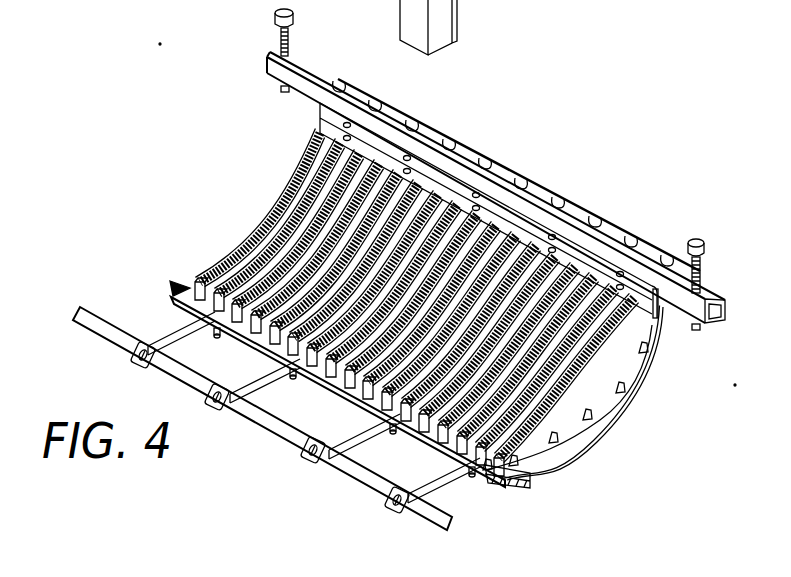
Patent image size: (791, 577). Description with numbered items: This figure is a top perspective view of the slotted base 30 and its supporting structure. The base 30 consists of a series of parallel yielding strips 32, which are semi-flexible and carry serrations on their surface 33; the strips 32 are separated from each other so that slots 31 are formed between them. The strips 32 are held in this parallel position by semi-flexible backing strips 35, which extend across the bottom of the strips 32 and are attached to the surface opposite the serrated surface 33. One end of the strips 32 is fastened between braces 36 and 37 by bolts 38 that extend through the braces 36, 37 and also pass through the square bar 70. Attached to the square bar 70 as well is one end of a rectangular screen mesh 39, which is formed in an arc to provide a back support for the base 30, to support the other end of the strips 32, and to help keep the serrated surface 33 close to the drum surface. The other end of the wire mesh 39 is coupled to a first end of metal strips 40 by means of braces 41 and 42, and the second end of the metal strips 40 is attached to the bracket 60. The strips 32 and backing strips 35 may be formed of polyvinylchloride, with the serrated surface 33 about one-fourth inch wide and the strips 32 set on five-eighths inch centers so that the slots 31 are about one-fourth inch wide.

The base 30 is at (250, 344).
The slots 31 is at (170, 287).
The yielding strips 32 is at (174, 280).
The serrated surface 33 is at (287, 200).
The backing strips 35 is at (590, 417).
The brace 36 is at (430, 160).
The brace 37 is at (667, 313).
The bolts 38 is at (556, 240).
The wire mesh 39 is at (653, 370).
The metal strips 40 is at (177, 335).
The brace 41 is at (532, 470).
The brace 42 is at (517, 490).
The bracket 60 is at (277, 435).
The square bar 70 is at (310, 68).